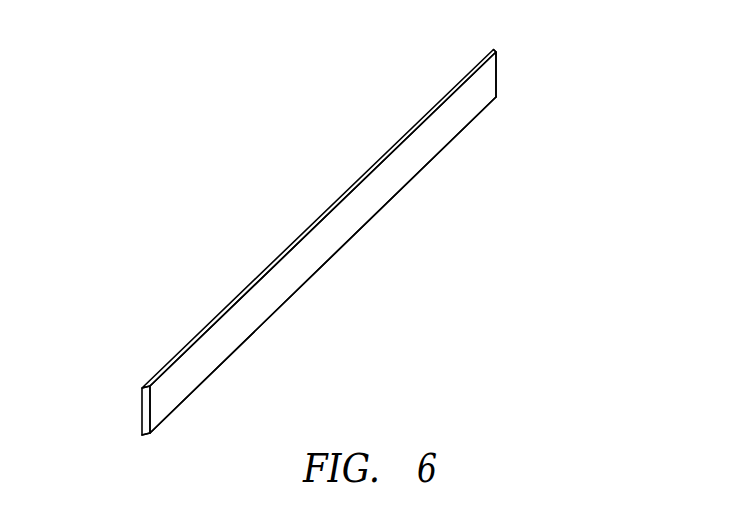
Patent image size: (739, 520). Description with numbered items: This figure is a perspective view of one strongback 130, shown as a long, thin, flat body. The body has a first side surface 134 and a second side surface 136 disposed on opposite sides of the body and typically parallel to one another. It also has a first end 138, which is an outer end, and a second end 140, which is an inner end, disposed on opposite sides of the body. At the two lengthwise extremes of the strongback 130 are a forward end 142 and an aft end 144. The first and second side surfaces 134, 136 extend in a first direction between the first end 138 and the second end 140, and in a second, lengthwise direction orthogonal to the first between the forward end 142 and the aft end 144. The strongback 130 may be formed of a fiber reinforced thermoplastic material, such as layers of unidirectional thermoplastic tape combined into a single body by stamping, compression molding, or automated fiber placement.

The strongback 130 is at (320, 277).
The first side surface 134 is at (158, 402).
The second side surface 136 is at (140, 412).
The first end 138 is at (227, 304).
The second end 140 is at (348, 241).
The forward end 142 is at (140, 435).
The aft end 144 is at (497, 72).